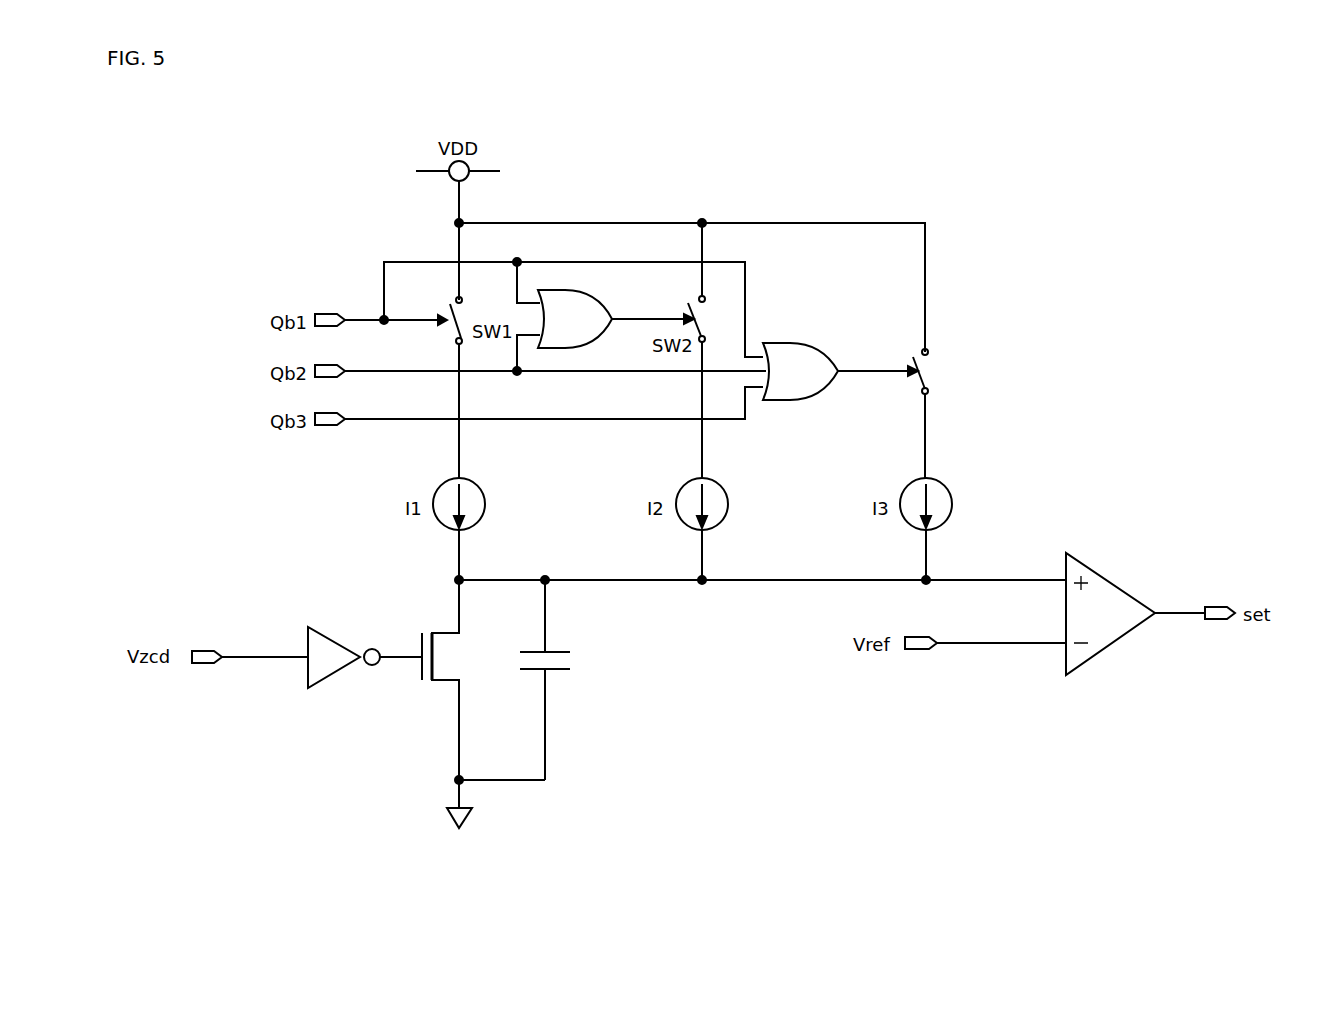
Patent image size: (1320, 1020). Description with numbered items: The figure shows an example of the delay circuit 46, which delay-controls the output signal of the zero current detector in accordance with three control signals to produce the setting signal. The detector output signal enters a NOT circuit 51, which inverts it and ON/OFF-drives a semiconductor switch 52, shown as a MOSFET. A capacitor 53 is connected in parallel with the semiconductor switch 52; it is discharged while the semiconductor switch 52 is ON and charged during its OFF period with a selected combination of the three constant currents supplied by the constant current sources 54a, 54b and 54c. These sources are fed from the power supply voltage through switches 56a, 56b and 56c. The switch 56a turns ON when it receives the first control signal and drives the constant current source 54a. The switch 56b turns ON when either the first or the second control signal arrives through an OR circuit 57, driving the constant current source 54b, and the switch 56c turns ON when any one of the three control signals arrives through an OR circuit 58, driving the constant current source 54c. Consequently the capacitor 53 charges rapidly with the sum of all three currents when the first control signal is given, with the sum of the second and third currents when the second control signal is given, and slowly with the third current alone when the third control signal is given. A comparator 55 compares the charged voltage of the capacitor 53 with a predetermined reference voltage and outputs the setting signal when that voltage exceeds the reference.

The delay circuit 46 is at (1001, 282).
The NOT circuit 51 is at (320, 627).
The semiconductor switch 52 is at (420, 693).
The capacitor 53 is at (563, 677).
The constant current source 54a is at (475, 483).
The constant current source 54b is at (728, 493).
The constant current source 54c is at (952, 493).
The comparator 55 is at (1113, 643).
The switch 56a is at (442, 293).
The switch 56b is at (707, 307).
The switch 56c is at (930, 380).
The OR circuit 57 is at (585, 292).
The OR circuit 58 is at (800, 342).